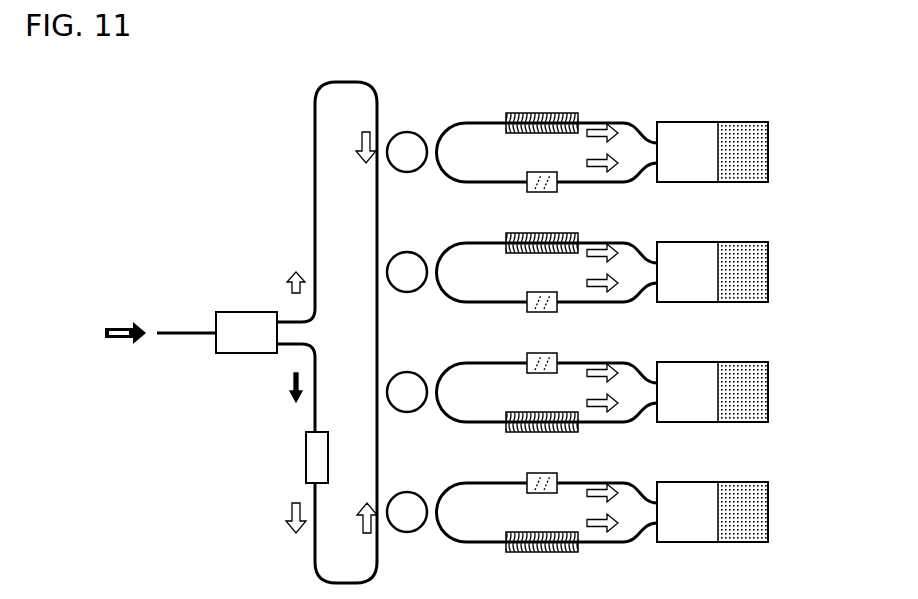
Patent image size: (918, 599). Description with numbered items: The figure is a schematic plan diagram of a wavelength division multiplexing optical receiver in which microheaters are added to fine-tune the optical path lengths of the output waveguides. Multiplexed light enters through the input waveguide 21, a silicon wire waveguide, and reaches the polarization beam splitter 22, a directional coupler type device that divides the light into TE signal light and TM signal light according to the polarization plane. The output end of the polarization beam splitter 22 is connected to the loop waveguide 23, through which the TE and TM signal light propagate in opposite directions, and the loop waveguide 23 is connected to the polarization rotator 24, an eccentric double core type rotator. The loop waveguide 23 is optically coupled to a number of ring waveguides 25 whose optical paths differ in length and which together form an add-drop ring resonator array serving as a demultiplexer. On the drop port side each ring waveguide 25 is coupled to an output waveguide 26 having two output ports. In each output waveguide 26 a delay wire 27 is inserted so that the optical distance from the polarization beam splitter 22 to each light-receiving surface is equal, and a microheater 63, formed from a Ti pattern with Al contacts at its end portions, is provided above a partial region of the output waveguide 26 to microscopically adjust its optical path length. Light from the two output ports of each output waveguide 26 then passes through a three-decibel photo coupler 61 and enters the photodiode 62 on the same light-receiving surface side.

The input waveguide 21 is at (178, 330).
The polarization beam splitter 22 is at (245, 312).
The loop waveguide 23 is at (316, 183).
The polarization rotator 24 is at (306, 458).
The ring waveguide 25 is at (407, 131).
The output waveguide 26 is at (474, 122).
The delay wire 27 is at (542, 172).
The microheater 63 is at (542, 317).
The 3 dB photo coupler 61 is at (682, 122).
The photodiode 62 is at (738, 122).